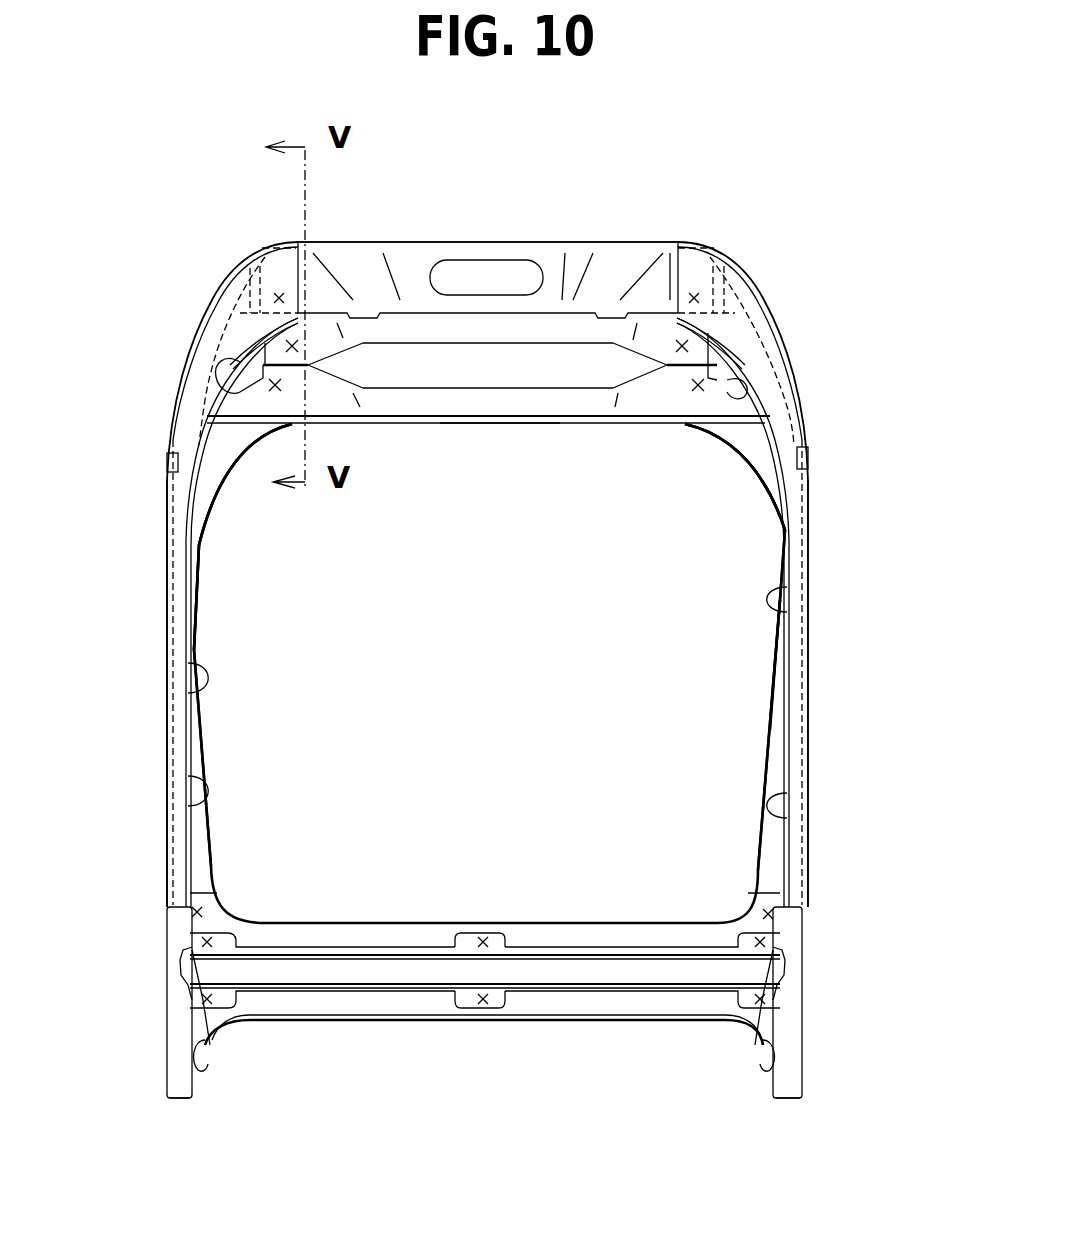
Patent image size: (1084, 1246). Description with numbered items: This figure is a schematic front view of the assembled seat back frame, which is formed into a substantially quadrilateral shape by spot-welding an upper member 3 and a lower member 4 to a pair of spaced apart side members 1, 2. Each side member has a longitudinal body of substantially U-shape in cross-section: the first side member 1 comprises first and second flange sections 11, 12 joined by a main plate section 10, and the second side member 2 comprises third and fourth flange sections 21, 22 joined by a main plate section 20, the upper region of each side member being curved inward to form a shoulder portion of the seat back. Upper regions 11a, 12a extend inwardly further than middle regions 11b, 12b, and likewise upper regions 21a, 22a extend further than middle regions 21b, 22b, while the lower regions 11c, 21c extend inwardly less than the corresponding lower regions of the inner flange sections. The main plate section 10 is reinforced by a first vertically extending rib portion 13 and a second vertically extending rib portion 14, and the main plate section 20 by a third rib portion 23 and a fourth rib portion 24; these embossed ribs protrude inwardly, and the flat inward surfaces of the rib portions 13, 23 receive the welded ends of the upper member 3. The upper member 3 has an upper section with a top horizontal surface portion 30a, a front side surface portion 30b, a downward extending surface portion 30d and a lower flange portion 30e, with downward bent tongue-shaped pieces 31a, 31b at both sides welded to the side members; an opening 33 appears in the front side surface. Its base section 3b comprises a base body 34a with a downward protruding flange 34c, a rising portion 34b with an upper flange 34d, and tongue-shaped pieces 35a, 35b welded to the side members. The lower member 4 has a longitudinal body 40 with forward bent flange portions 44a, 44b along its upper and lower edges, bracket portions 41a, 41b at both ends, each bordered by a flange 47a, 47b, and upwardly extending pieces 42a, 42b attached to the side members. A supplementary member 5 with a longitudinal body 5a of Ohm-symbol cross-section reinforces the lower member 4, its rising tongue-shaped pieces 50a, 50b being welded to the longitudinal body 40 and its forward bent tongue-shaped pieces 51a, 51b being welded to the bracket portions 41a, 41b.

The first side member 1 is at (766, 266).
The second side member 2 is at (207, 277).
The upper member 3 is at (532, 213).
The base section 3b is at (504, 440).
The lower member 4 is at (525, 906).
The supplementary member 5 is at (598, 1000).
The longitudinal body 5a is at (642, 972).
The main plate section 10 is at (808, 532).
The first flange section 11 is at (795, 808).
The upper region 11a is at (745, 395).
The middle region 11b is at (773, 607).
The lower region 11c is at (762, 1053).
The second flange section 12 is at (755, 505).
The upper region 12a is at (745, 452).
The middle region 12b is at (772, 632).
The first vertically extending rib portion 13 is at (773, 337).
The second vertically extending rib portion 14 is at (808, 637).
The main plate section 20 is at (167, 553).
The third flange section 21 is at (198, 790).
The upper region 21a is at (232, 363).
The middle region 21b is at (200, 672).
The lower region 21c is at (207, 1062).
The fourth flange section 22 is at (203, 488).
The upper region 22a is at (240, 453).
The middle region 22b is at (197, 643).
The third vertically extending rib portion 23 is at (215, 328).
The fourth vertically extending rib portion 24 is at (167, 628).
The top horizontal surface portion 30a is at (380, 242).
The front side surface portion 30b is at (408, 253).
The downward extending surface portion 30d is at (543, 326).
The lower flange portion 30e is at (682, 364).
The tongue-shaped piece 31a is at (720, 265).
The tongue-shaped piece 31b is at (235, 262).
The slot 33 is at (458, 278).
The base body 34a is at (462, 406).
The rising portion 34b is at (563, 403).
The downward protruding flange 34c is at (413, 420).
The upper flange 34d is at (647, 412).
The tongue-shaped piece 35a is at (800, 450).
The tongue-shaped piece 35b is at (167, 458).
The longitudinal body 40 is at (403, 938).
The bracket portion 41a is at (805, 1040).
The bracket portion 41b is at (167, 1028).
The upwardly extending piece 42a is at (757, 910).
The upwardly extending piece 42b is at (222, 918).
The forward bent flange portion 44a is at (575, 922).
The forward bent flange portion 44b is at (350, 1010).
The flange 47a is at (787, 1070).
The flange 47b is at (182, 1077).
The rising tongue-shaped pieces 50a is at (475, 938).
The rising tongue-shaped pieces 50b is at (470, 1008).
The forward bent tongue-shaped piece 51a is at (808, 967).
The forward bent tongue-shaped piece 51b is at (167, 968).